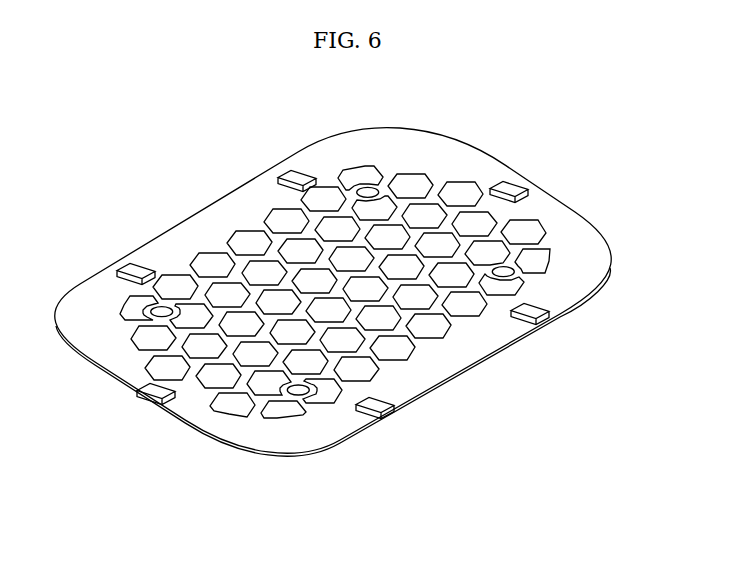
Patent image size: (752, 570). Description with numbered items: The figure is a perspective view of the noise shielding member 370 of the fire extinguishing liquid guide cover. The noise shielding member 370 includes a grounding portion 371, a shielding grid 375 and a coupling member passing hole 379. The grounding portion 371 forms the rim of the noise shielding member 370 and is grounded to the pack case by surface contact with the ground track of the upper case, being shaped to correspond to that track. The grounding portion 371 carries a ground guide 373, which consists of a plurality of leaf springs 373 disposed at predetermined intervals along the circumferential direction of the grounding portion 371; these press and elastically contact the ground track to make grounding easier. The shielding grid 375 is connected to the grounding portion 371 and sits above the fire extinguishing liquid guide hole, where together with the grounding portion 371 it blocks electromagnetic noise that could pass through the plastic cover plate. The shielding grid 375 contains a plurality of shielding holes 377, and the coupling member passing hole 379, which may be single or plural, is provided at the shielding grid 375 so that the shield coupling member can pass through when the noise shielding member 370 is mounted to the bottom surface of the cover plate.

The noise shielding member 370 is at (176, 163).
The grounding portion 371 is at (458, 355).
The ground guide 373 is at (300, 180).
The shielding grid 375 is at (387, 351).
The shielding holes 377 is at (293, 394).
The coupling member passing hole 379 is at (369, 184).